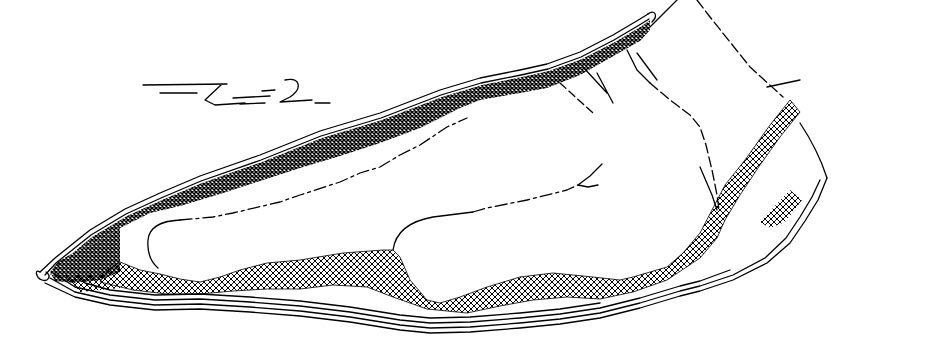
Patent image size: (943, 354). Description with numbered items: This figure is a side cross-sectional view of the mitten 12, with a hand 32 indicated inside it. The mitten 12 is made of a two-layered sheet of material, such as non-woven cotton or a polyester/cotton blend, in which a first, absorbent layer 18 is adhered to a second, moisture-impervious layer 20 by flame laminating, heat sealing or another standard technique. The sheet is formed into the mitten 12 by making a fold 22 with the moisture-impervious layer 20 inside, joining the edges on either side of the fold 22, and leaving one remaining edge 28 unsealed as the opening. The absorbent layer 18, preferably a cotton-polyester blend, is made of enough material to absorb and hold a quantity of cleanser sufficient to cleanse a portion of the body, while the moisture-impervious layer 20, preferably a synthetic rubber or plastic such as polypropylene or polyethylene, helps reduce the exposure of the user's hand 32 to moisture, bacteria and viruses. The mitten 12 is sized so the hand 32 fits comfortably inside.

The mitten 12 is at (240, 153).
The absorbent layer 18 is at (467, 80).
The moisture-impervious layer 20 is at (548, 82).
The fold 22 is at (41, 275).
The remaining edge 28 is at (803, 126).
The hand 32 is at (213, 253).